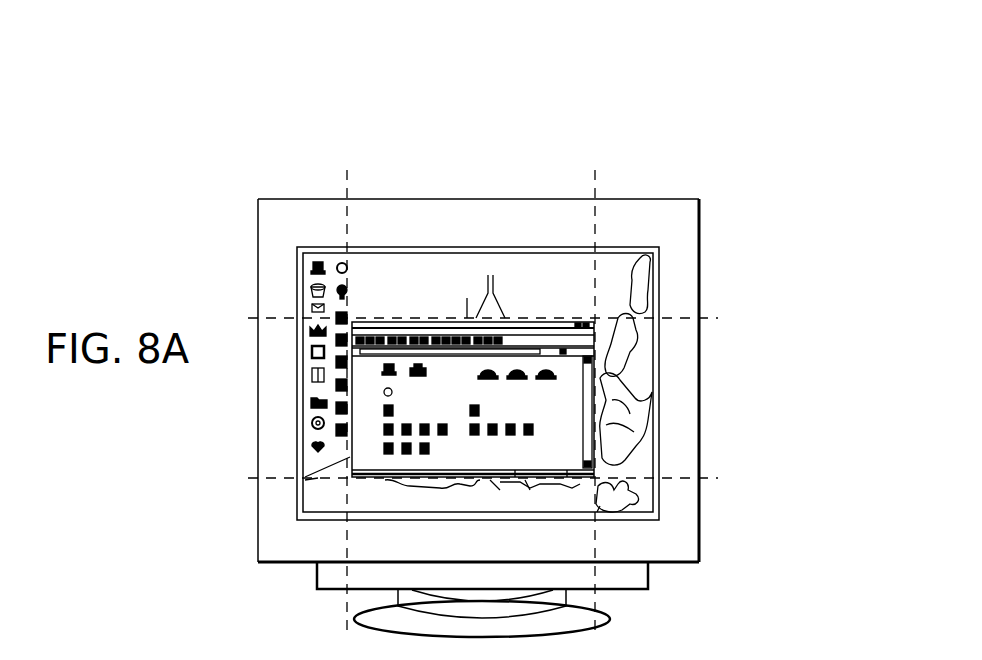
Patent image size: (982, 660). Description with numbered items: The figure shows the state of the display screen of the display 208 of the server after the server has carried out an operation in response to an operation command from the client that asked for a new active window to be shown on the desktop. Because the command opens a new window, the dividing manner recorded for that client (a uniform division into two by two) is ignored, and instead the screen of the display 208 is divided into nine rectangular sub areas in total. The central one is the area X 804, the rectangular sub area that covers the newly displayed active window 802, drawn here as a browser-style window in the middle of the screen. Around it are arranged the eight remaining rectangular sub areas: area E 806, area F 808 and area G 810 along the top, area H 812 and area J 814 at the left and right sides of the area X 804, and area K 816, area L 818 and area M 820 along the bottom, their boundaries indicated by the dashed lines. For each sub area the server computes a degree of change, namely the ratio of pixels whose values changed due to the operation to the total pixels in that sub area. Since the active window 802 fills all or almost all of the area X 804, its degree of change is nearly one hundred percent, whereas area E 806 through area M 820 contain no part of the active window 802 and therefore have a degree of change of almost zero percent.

The display 208 is at (668, 192).
The active window 802 is at (595, 320).
The area X 804 is at (555, 430).
The area E 806 is at (320, 262).
The area F 808 is at (500, 275).
The area G 810 is at (635, 262).
The area H 812 is at (320, 402).
The area J 814 is at (597, 380).
The area K 816 is at (322, 498).
The area L 818 is at (397, 502).
The area M 820 is at (633, 500).